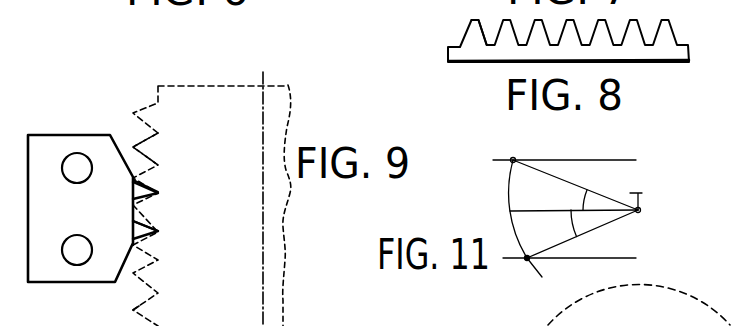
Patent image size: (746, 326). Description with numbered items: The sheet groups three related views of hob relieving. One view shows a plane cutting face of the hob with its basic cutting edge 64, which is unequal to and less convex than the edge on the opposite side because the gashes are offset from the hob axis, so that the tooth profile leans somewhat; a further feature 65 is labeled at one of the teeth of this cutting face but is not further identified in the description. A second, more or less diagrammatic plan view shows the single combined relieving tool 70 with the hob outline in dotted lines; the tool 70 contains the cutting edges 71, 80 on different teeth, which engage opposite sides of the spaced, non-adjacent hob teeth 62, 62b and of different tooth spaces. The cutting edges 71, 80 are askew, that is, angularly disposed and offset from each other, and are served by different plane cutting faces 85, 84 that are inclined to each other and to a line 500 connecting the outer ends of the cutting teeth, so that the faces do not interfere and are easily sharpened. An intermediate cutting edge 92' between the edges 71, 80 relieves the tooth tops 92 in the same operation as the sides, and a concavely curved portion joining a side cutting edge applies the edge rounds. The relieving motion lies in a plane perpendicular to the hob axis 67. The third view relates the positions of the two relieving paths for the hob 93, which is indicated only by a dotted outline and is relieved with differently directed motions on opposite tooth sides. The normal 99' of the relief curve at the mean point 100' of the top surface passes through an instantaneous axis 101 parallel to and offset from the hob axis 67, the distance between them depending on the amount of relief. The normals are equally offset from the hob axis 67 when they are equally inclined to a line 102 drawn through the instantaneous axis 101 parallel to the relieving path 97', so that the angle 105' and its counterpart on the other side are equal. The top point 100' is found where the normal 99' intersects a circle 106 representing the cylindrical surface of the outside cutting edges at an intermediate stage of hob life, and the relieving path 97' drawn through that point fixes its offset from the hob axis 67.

In FIG. 8, the cutting edge 64 is at (465, 33).
In FIG. 8, the rack tooth 65 is at (478, 32).
In FIG. 9, the relieving tool 70 is at (82, 143).
In FIG. 9, the hob tooth 62 is at (147, 260).
In FIG. 9, the hob tooth 62b is at (147, 172).
In FIG. 9, the cutting edge 71 is at (147, 189).
In FIG. 9, the cutting face 85 is at (134, 190).
In FIG. 9, the line connecting outer ends of the cutting teeth 500 is at (158, 207).
In FIG. 9, the cutting edge 80 is at (155, 240).
In FIG. 9, the cutting face 84 is at (136, 226).
In FIG. 9, the cutting edge 92' is at (113, 209).
In FIG. 9, the tooth top 92 is at (122, 310).
In FIG. 9, the hob axis 67 is at (263, 292).
In FIG. 11, the hob axis 67 is at (640, 193).
In FIG. 11, the instantaneous axis 101 is at (642, 211).
In FIG. 11, the mean point of the top surface 100' is at (512, 277).
In FIG. 11, the line 102 is at (512, 212).
In FIG. 11, the relieving path 97' is at (591, 254).
In FIG. 11, the normal 99' is at (585, 234).
In FIG. 11, the angle 105' is at (559, 226).
In FIG. 11, the circle 106 is at (535, 268).
In FIG. 11, the hob 93 is at (682, 305).